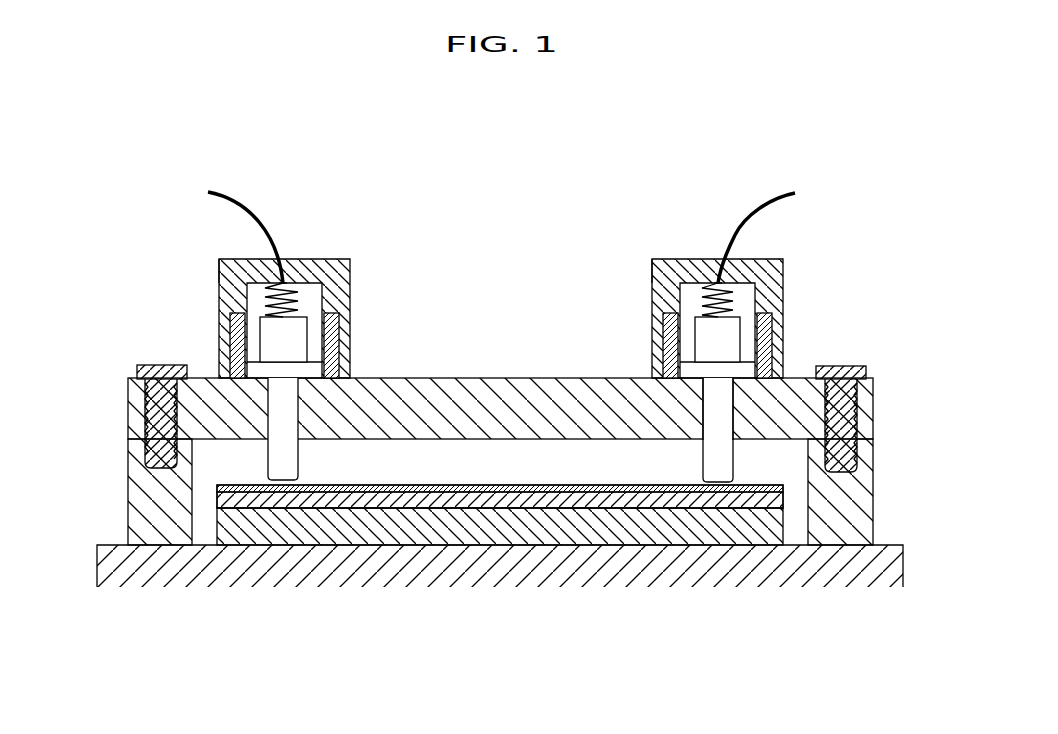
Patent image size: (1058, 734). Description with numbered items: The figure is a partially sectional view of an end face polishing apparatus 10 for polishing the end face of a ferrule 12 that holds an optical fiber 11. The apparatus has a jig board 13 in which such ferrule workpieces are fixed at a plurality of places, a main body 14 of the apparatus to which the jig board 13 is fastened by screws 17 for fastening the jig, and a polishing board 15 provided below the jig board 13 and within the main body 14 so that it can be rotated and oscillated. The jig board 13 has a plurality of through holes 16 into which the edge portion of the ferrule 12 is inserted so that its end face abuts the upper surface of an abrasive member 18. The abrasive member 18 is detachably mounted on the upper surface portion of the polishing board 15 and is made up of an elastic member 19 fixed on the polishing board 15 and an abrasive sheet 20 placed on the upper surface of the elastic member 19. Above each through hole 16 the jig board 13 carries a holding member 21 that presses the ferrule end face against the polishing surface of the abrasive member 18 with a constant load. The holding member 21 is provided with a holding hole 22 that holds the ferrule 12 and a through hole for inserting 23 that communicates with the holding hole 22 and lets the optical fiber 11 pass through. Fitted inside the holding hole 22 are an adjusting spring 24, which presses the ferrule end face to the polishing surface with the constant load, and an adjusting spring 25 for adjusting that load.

The end face polishing apparatus 10 is at (791, 118).
The optical fiber 11 is at (257, 212).
The ferrule 12 is at (287, 351).
The jig board 13 is at (128, 412).
The main body of the apparatus 14 is at (478, 575).
The polishing board 15 is at (353, 545).
The through hole 16 is at (706, 417).
The screw for fastening the jig 17 is at (152, 363).
The abrasive member 18 is at (703, 676).
The elastic member 19 is at (612, 502).
The abrasive sheet 20 is at (640, 495).
The holding member 21 is at (352, 263).
The holding hole 22 is at (220, 258).
The through hole for inserting 23 is at (289, 262).
The adjusting spring 24 is at (293, 300).
The adjusting spring 25 is at (220, 308).